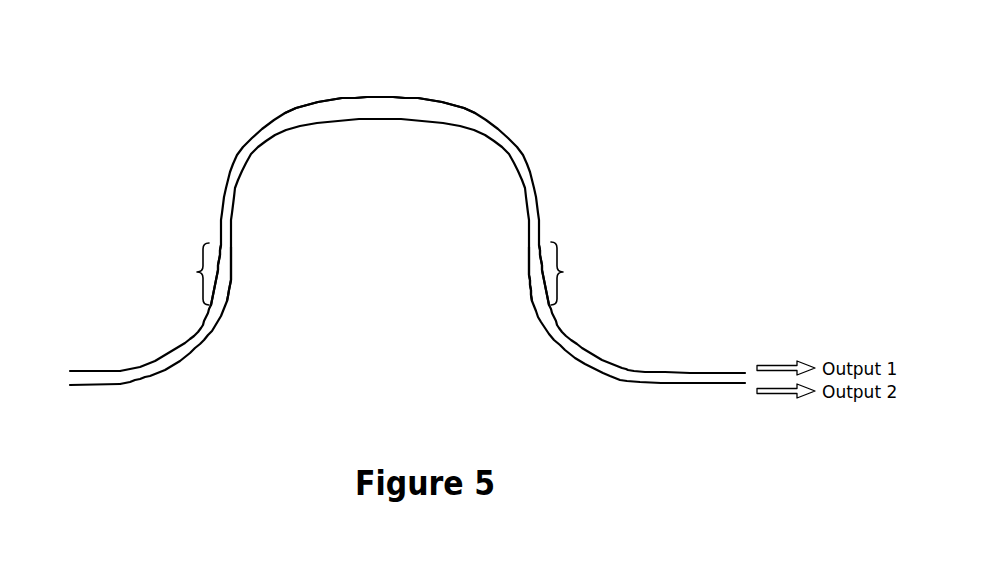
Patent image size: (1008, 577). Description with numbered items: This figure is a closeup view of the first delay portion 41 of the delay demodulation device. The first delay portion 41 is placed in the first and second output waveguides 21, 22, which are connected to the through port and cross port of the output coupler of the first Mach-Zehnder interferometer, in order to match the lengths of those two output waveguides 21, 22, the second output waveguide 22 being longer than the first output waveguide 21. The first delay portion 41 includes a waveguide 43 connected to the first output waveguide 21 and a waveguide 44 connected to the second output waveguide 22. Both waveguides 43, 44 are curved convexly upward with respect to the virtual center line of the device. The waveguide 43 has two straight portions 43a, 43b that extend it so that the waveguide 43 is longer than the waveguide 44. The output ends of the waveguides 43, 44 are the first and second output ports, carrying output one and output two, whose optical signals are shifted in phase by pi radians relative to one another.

The first output waveguide 21 is at (112, 370).
The second output waveguide 22 is at (100, 387).
The first delay portion 41 is at (418, 98).
The waveguide 43 is at (476, 124).
The waveguide 44 is at (473, 156).
The straight portion 43a is at (196, 272).
The straight portion 43b is at (563, 272).